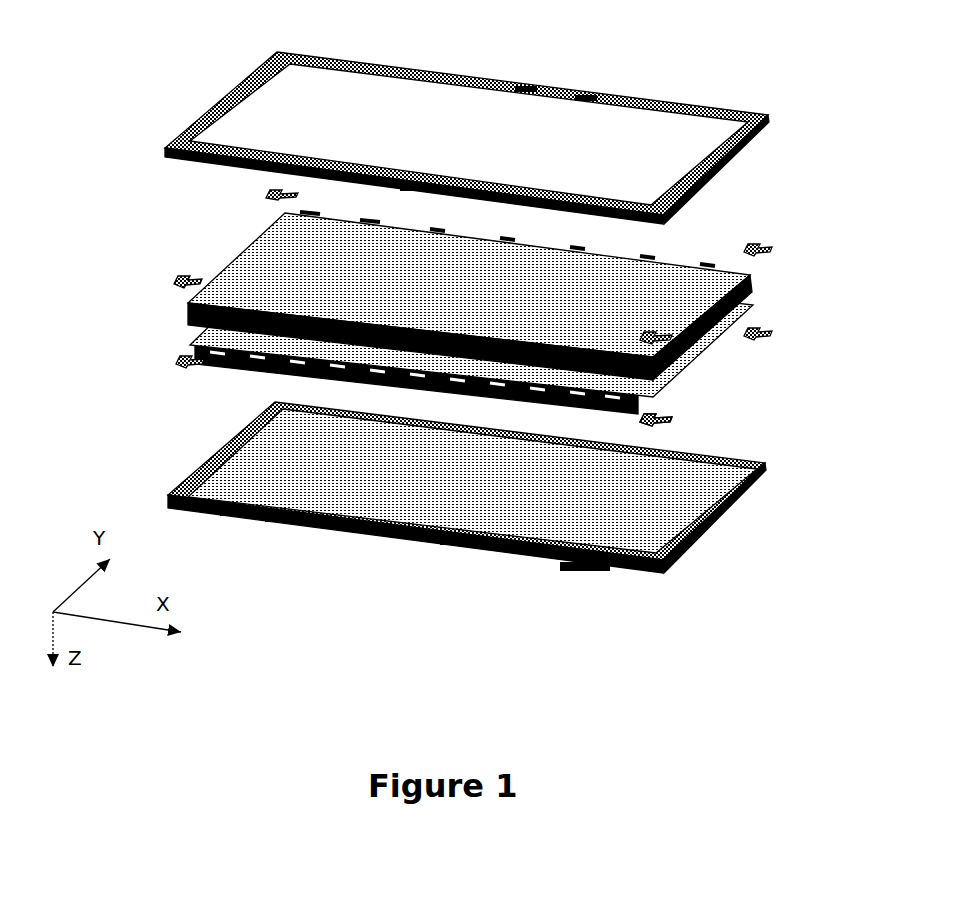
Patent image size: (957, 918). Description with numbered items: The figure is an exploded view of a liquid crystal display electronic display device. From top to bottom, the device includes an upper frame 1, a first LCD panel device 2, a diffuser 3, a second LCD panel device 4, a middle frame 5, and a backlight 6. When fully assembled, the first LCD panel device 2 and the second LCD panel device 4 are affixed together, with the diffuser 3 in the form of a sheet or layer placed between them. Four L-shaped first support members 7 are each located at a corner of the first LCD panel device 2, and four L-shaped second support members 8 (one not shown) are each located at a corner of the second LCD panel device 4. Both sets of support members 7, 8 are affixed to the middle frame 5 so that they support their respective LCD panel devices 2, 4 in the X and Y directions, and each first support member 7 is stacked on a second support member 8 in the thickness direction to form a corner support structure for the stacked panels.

The upper frame 1 is at (778, 113).
The first LCD panel device 2 is at (192, 303).
The diffuser 3 is at (746, 299).
The second LCD panel device 4 is at (190, 344).
The middle frame 5 is at (746, 506).
The backlight 6 is at (640, 514).
The first support members 7 is at (262, 193).
The second support members 8 is at (182, 368).